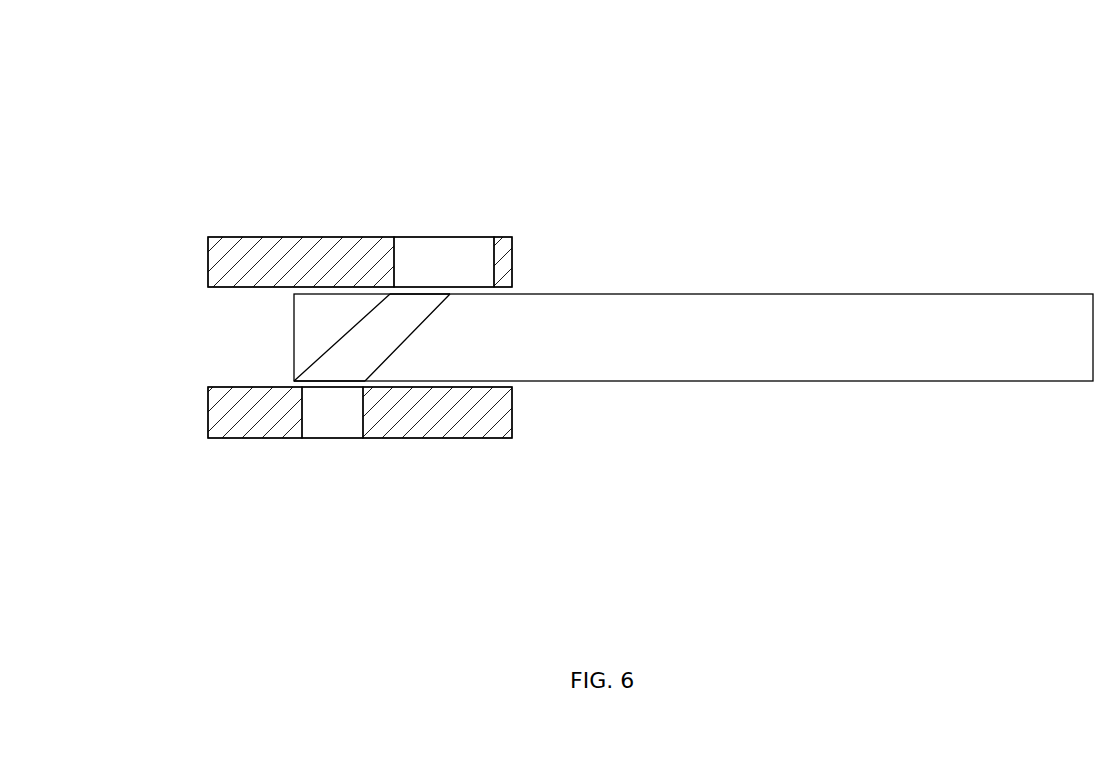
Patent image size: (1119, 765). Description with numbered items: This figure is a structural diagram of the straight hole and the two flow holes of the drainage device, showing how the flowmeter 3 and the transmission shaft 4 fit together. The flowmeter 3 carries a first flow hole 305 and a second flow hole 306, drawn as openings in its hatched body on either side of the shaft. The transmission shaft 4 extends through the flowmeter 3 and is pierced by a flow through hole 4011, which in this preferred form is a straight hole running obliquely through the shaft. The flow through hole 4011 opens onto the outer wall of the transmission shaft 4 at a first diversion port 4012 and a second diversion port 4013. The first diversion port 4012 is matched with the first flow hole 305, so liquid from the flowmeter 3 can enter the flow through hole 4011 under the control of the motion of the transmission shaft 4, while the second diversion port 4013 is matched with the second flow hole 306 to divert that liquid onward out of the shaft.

The flowmeter 3 is at (258, 220).
The second flow hole 306 is at (443, 235).
The first flow hole 305 is at (328, 442).
The transmission shaft 4 is at (782, 348).
The flow through hole 4011 is at (377, 332).
The first diversion port 4012 is at (338, 382).
The second diversion port 4013 is at (420, 300).